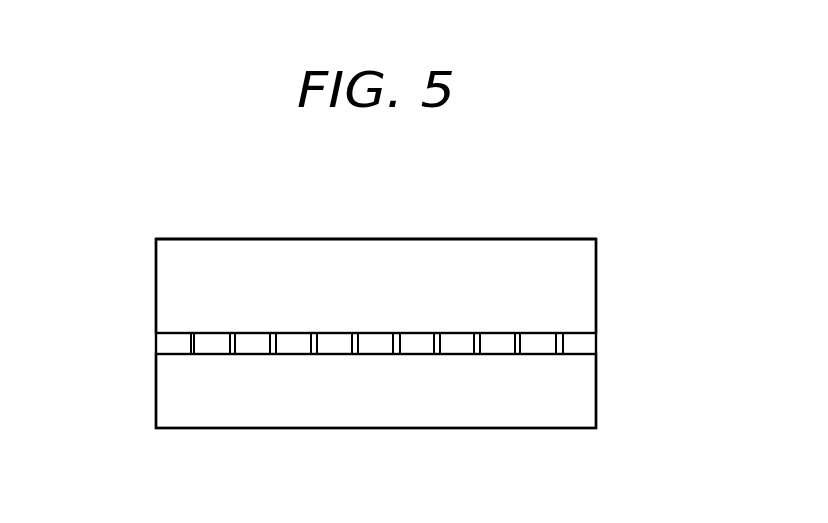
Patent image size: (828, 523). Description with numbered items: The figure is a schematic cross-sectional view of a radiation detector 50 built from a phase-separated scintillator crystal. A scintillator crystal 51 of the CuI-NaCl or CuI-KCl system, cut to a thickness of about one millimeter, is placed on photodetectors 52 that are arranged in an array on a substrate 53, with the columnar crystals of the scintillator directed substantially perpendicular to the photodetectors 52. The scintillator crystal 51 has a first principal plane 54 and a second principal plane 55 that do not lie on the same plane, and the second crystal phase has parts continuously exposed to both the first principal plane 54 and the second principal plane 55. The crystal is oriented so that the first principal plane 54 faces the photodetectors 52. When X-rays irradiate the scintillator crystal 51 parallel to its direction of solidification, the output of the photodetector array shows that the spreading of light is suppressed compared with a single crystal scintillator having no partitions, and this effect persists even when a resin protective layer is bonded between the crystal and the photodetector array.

The radiation detector 50 is at (366, 160).
The scintillator crystal 51 is at (172, 275).
The photodetectors 52 is at (212, 347).
The substrate 53 is at (238, 413).
The first principal plane 54 is at (577, 337).
The second principal plane 55 is at (527, 230).